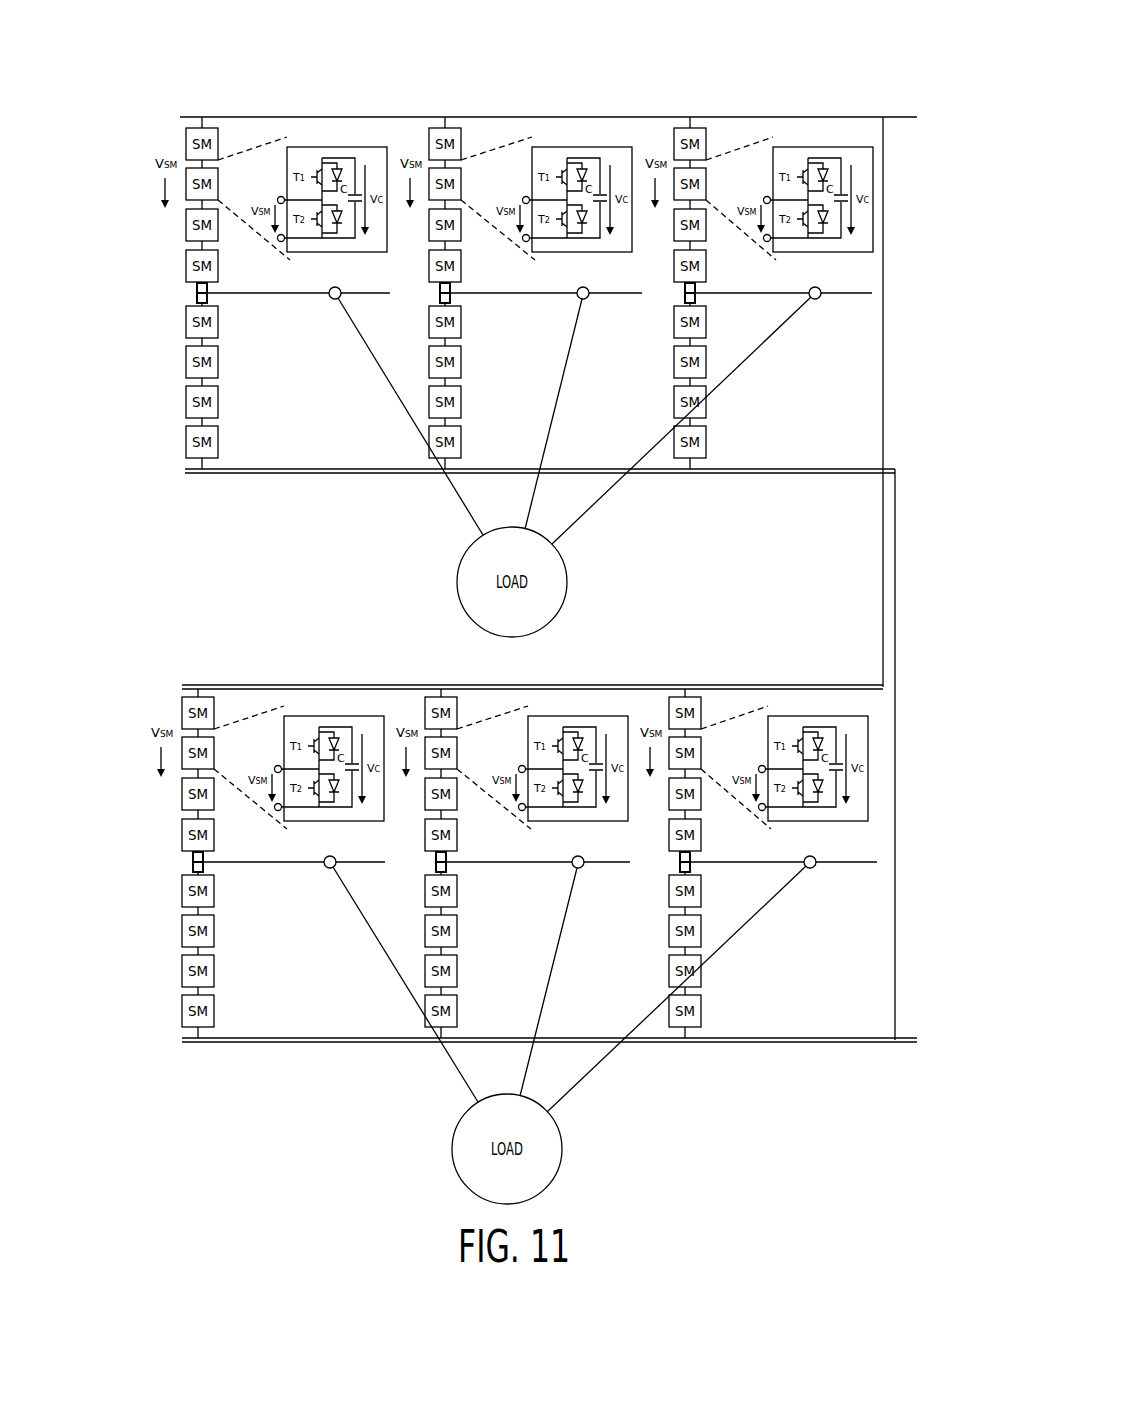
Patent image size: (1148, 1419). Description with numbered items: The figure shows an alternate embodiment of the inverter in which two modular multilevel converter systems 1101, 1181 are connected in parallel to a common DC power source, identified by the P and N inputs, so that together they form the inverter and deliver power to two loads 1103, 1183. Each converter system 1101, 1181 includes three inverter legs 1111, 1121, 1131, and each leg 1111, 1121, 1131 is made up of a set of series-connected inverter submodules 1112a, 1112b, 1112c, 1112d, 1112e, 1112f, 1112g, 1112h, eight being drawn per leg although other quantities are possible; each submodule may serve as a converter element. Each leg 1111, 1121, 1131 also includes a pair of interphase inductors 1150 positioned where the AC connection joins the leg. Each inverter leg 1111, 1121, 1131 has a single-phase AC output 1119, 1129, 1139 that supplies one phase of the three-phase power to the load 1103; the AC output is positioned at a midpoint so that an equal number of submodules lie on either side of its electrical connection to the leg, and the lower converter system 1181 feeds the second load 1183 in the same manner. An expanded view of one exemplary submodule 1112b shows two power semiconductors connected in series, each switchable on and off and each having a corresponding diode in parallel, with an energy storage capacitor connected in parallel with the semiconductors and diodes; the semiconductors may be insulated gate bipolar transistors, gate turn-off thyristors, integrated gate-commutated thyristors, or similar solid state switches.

The modular multilevel converter system 1101 is at (156, 70).
The inverter leg 1111 is at (255, 107).
The inverter leg 1121 is at (500, 107).
The inverter leg 1131 is at (745, 107).
The inverter submodule 1112a is at (185, 133).
The inverter submodule 1112b is at (290, 145).
The inverter submodule 1112c is at (185, 215).
The inverter submodule 1112d is at (185, 256).
The inverter submodule 1112e is at (185, 312).
The inverter submodule 1112f is at (185, 352).
The inverter submodule 1112g is at (185, 392).
The inverter submodule 1112h is at (185, 432).
The single-phase AC output 1119 is at (329, 297).
The single-phase AC output 1129 is at (577, 297).
The single-phase AC output 1139 is at (809, 297).
The interphase inductor 1150 is at (208, 287).
The load 1103 is at (458, 586).
The modular multilevel converter system 1181 is at (192, 660).
The load 1183 is at (466, 1183).